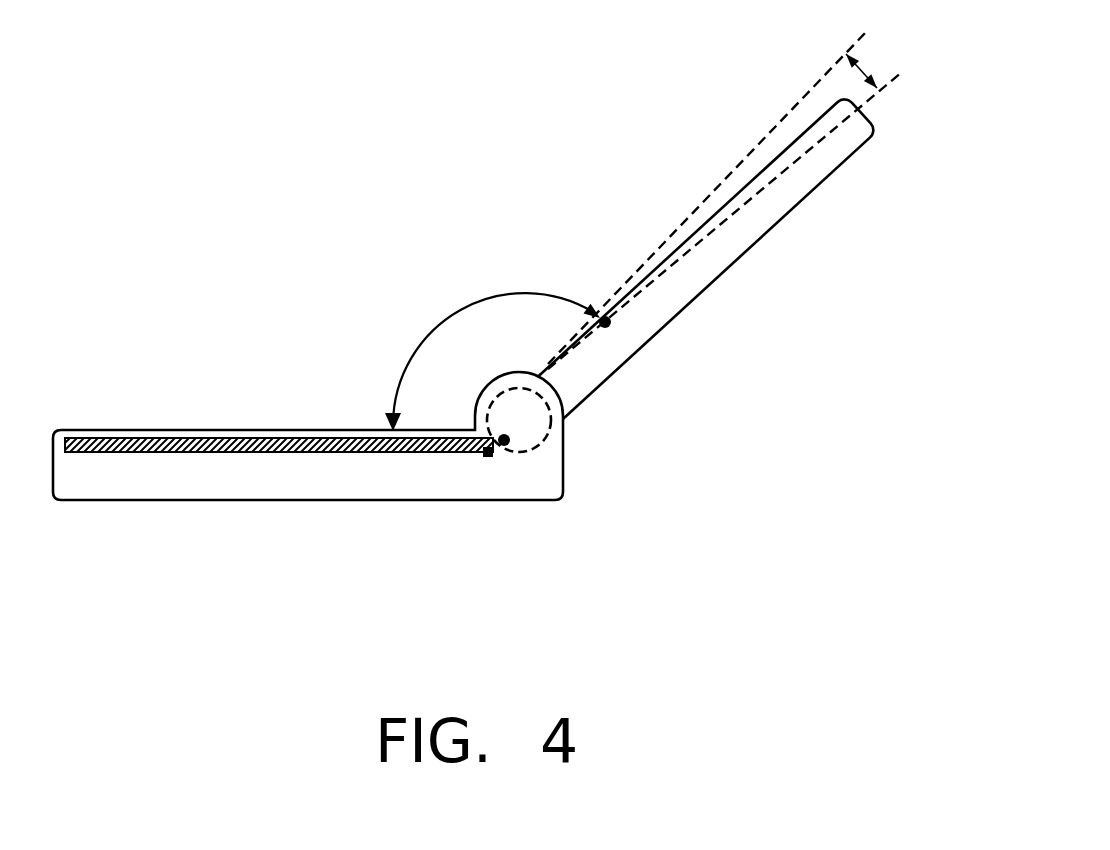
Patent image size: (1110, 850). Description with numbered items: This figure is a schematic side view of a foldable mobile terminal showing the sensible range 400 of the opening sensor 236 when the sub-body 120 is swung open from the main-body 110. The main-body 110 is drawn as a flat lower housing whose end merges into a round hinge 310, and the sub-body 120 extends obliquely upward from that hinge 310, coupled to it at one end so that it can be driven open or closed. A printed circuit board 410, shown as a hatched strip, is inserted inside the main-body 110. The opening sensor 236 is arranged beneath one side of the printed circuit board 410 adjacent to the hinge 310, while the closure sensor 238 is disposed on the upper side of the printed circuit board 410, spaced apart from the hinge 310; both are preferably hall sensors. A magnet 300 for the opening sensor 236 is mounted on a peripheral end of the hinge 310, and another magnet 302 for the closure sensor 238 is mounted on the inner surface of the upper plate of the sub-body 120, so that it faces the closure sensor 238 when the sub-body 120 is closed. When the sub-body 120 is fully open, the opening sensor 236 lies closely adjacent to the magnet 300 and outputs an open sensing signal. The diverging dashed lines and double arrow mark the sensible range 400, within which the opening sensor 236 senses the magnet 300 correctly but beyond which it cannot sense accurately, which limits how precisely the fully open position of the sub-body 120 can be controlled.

The main-body 110 is at (240, 487).
The sub-body 120 is at (752, 228).
The opening sensor 236 is at (488, 458).
The closure sensor 238 is at (392, 432).
The magnet for the opening sensor 300 is at (505, 447).
The magnet for the closure sensor 302 is at (610, 326).
The hinge 310 is at (537, 430).
The sensible range 400 is at (866, 74).
The printed circuit board 410 is at (151, 438).